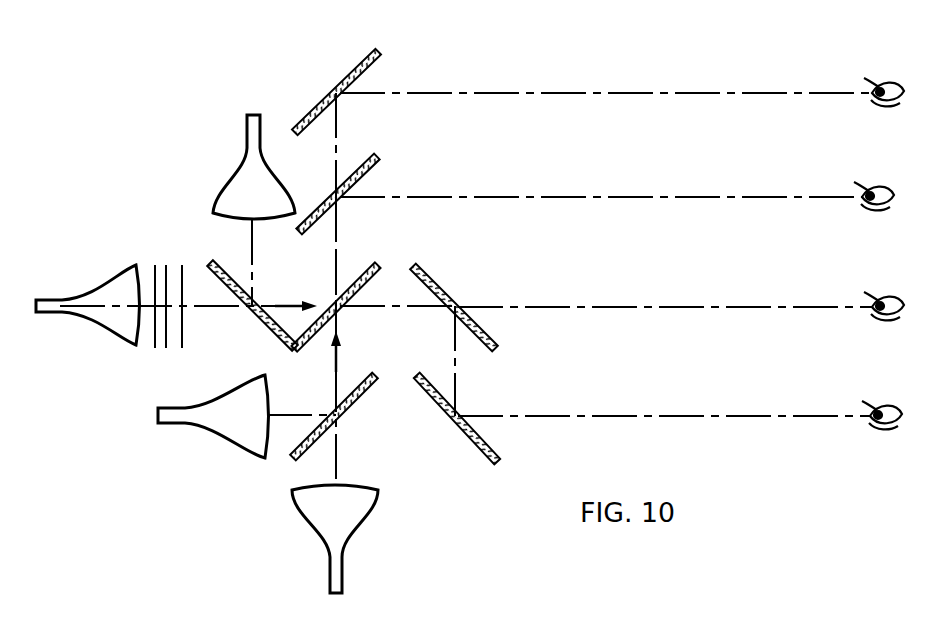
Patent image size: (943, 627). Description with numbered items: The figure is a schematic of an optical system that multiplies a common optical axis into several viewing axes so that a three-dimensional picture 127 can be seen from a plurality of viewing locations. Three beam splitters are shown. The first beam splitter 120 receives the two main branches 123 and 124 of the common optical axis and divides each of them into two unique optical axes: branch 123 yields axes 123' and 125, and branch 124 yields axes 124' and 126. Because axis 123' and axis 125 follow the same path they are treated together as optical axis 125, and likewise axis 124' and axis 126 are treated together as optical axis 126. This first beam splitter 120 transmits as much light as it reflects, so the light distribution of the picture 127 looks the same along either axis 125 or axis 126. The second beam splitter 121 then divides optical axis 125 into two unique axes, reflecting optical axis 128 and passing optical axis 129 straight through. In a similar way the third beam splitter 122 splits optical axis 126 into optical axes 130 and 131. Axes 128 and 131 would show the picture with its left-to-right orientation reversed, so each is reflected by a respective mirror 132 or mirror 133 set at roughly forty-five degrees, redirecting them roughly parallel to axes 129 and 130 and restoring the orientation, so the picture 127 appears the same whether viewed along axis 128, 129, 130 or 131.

The first beam splitter 120 is at (314, 346).
The second beam splitter 121 is at (426, 270).
The third beam splitter 122 is at (376, 166).
The main branch of the common optical axis 123 is at (291, 293).
The unique optical axis 123' is at (397, 323).
The main branch of the common optical axis 124 is at (359, 351).
The unique optical axis 124' is at (310, 273).
The first optical axis 125 is at (363, 302).
The optical axis 126 is at (338, 237).
The three-dimensional picture 127 is at (183, 255).
The optical axis 128 is at (456, 378).
The optical axis 129 is at (644, 307).
The optical axis 130 is at (644, 197).
The optical axis 131 is at (641, 93).
The mirror 132 is at (458, 425).
The mirror 133 is at (356, 72).